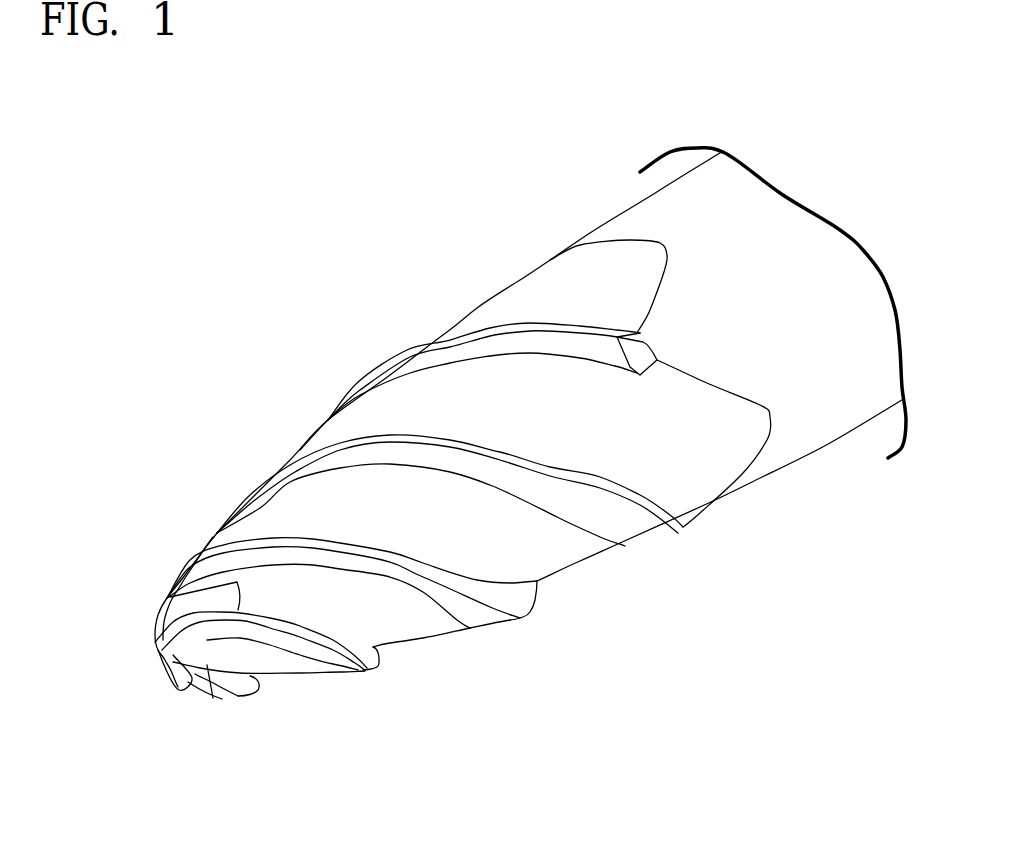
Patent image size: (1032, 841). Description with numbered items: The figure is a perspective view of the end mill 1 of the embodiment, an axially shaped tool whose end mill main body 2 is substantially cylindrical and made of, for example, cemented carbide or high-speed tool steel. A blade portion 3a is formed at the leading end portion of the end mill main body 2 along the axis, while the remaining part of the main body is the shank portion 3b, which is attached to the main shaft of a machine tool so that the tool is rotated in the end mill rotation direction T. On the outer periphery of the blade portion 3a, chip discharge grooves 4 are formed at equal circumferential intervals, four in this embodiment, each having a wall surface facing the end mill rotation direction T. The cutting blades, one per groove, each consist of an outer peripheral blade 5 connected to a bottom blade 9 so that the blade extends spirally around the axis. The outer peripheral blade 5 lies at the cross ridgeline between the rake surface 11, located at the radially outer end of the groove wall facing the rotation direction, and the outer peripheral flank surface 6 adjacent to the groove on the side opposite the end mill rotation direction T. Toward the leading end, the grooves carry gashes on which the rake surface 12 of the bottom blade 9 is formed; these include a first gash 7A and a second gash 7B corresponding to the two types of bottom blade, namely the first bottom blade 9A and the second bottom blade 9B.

The end mill 1 is at (817, 140).
The end mill main body 2 is at (547, 182).
The blade portion 3a is at (302, 355).
The shank portion 3b is at (623, 197).
The chip discharge groove 4 is at (568, 288).
The outer peripheral blade 5 is at (407, 350).
The outer peripheral flank surface 6 is at (627, 522).
The first gash 7A is at (213, 596).
The second gash 7B is at (243, 662).
The bottom blade 9 is at (190, 705).
The first bottom blade 9A is at (167, 597).
The second bottom blade 9B is at (153, 635).
The rake surface of the outer peripheral blade 11 is at (513, 595).
The rake surface of the bottom blade 12 is at (207, 667).
The end mill rotation direction T is at (748, 264).